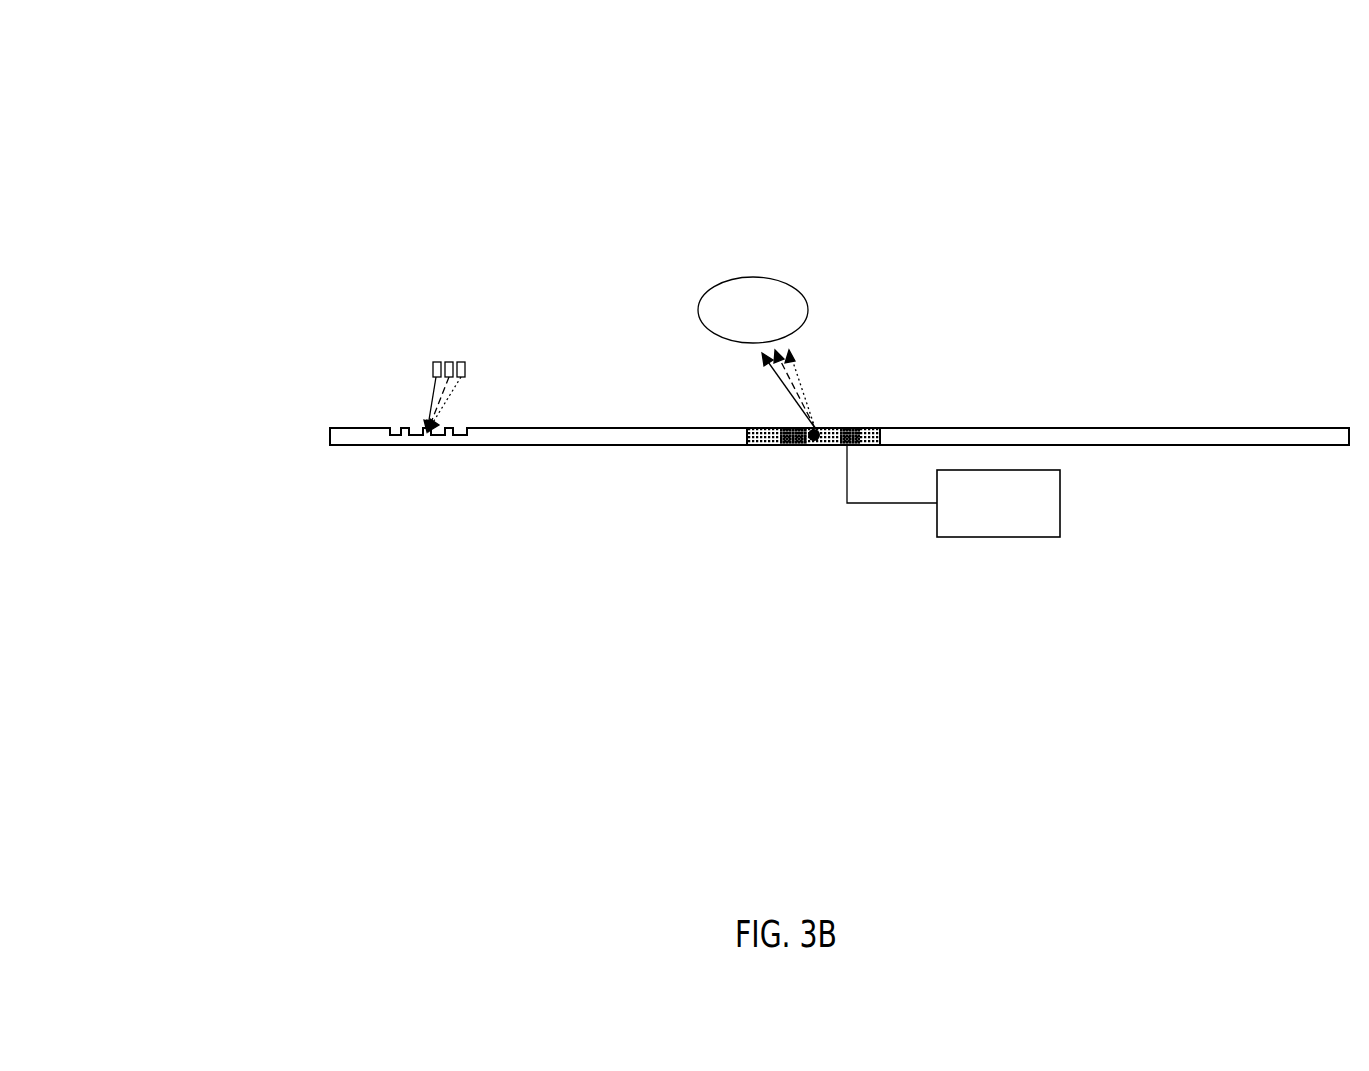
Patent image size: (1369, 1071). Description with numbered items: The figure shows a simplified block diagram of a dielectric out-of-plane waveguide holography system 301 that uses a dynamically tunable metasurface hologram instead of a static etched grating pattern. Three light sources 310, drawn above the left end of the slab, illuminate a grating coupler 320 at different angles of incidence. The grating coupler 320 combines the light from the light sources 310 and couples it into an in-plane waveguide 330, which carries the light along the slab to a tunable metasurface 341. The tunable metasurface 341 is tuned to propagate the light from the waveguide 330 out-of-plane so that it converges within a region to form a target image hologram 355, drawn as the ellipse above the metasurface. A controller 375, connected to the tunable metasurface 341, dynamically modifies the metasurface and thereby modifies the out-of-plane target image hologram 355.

The dielectric out-of-plane waveguide holography system 301 is at (208, 77).
The light sources 310 is at (431, 363).
The grating coupler 320 is at (387, 428).
The in-plane waveguide 330 is at (596, 446).
The tunable metasurface 341 is at (764, 415).
The target image hologram 355 is at (731, 277).
The controller 375 is at (1015, 529).